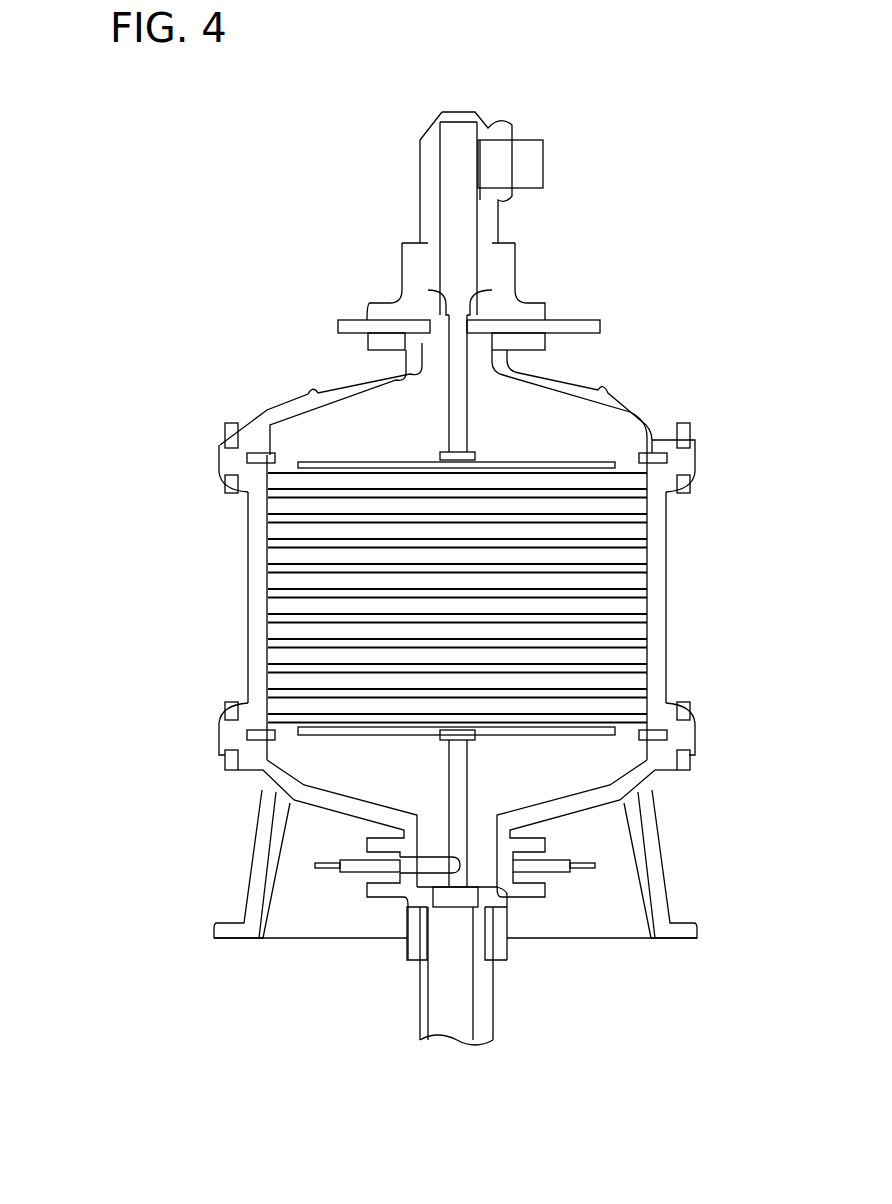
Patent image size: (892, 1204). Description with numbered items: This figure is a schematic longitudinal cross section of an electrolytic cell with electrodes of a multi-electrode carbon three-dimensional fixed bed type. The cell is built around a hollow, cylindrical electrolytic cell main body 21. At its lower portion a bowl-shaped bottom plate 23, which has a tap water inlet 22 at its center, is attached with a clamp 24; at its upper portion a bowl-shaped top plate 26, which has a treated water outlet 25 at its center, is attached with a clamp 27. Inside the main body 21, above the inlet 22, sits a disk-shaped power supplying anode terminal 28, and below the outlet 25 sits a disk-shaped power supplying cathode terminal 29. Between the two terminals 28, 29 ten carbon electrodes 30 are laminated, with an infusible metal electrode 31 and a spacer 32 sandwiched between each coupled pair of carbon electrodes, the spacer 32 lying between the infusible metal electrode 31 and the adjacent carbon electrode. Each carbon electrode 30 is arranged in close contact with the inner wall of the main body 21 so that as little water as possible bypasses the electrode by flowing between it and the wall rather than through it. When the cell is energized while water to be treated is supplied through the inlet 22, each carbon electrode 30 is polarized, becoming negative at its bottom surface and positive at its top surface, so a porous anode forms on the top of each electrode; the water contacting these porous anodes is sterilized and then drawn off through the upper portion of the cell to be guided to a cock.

The electrolytic cell main body 21 is at (418, 639).
The tap water inlet 22 is at (493, 1003).
The bowl-shaped bottom plate 23 is at (325, 805).
The clamp 24 is at (222, 765).
The treated water outlet 25 is at (420, 190).
The bowl-shaped top plate 26 is at (272, 410).
The clamp 27 is at (222, 492).
The disk-shaped power supplying anode terminal 28 is at (393, 740).
The disk-shaped power supplying cathode terminal 29 is at (392, 462).
The carbon electrode 30 is at (625, 703).
The infusible metal electrode 31 is at (278, 540).
The spacer 32 is at (290, 552).